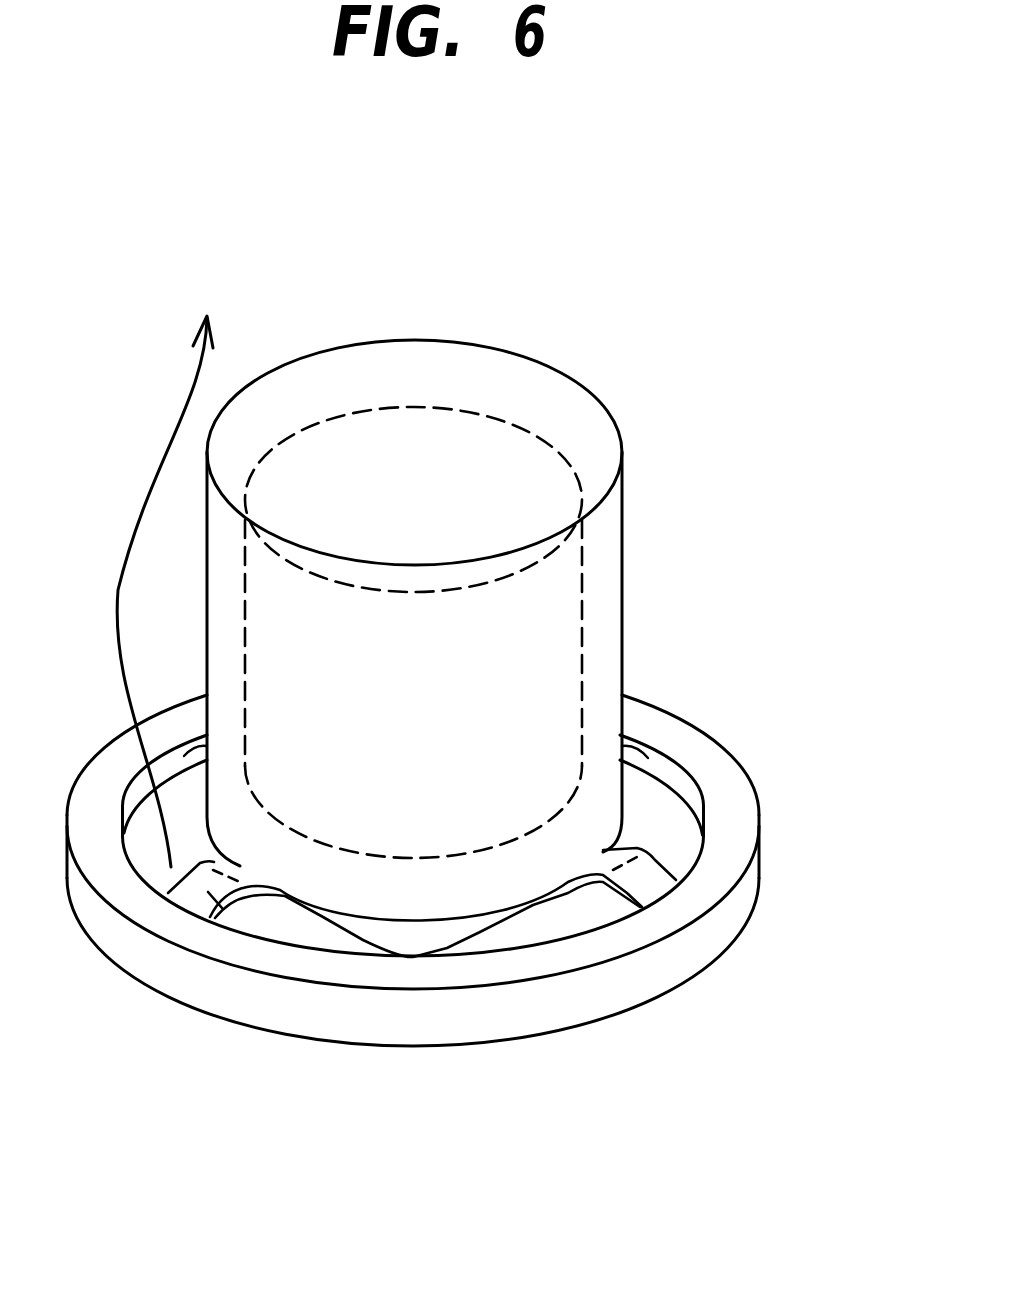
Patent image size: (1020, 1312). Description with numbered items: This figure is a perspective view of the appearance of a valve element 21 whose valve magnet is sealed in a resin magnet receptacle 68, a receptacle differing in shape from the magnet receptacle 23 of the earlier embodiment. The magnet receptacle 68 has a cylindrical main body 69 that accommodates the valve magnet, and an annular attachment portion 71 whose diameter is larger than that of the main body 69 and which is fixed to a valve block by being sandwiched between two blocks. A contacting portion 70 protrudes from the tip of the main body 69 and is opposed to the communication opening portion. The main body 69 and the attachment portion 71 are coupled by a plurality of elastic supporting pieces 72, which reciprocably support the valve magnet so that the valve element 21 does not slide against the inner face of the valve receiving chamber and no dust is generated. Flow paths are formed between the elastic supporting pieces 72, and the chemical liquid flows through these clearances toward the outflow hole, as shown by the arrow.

The valve element 21 is at (683, 412).
The magnet receptacle 23 is at (510, 641).
The magnet receptacle 68 is at (622, 490).
The cylindrical main body 69 is at (424, 363).
The contacting portion 70 is at (413, 920).
The annular attachment portion 71 is at (653, 972).
The elastic supporting pieces 72 is at (648, 870).